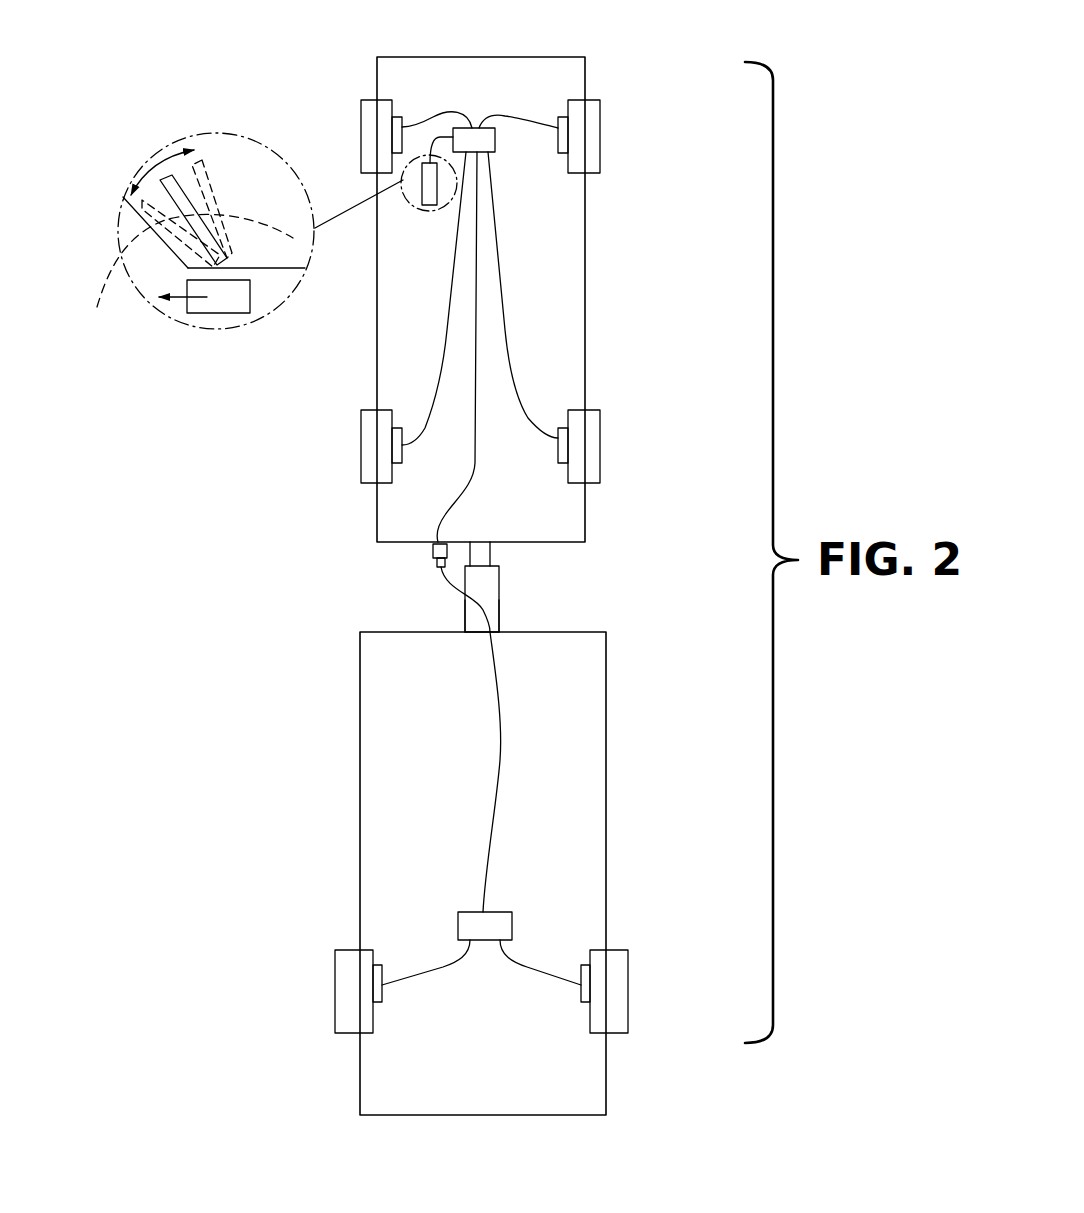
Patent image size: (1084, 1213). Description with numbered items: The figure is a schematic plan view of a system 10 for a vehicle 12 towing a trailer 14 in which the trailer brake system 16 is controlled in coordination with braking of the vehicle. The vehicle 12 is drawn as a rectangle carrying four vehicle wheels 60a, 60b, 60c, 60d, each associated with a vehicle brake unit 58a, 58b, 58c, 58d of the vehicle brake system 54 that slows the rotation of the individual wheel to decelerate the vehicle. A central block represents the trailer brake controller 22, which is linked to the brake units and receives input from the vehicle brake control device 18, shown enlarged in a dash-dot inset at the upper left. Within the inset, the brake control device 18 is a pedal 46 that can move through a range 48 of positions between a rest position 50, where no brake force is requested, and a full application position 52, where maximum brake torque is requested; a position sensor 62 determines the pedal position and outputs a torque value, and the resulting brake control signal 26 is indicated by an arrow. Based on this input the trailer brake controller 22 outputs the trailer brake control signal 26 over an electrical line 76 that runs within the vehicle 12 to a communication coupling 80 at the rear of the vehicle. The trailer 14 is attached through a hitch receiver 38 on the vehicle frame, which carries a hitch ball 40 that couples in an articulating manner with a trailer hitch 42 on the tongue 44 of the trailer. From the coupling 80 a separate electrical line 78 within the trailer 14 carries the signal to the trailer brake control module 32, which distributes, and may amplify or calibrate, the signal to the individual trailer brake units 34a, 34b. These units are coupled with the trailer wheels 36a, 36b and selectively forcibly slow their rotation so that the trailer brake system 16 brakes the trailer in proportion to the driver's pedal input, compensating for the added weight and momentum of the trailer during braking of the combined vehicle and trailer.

The system 10 is at (676, 95).
The vehicle 12 is at (587, 297).
The trailer 14 is at (618, 764).
The trailer brake system 16 is at (532, 923).
The vehicle brake control device 18 is at (257, 183).
The trailer brake controller 22 is at (537, 278).
The vehicle brake system 54 is at (495, 143).
The brake control signal 26 is at (176, 303).
The trailer brake control module 32 is at (467, 911).
The trailer brake unit 34a is at (378, 965).
The trailer brake unit 34b is at (579, 965).
The trailer wheel 36a is at (336, 1004).
The trailer wheel 36b is at (627, 1006).
The hitch receiver 38 is at (493, 552).
The hitch ball 40 is at (500, 593).
The trailer hitch 42 is at (463, 577).
The tongue 44 is at (494, 616).
The pedal 46 is at (430, 205).
The range of movement 48 is at (146, 176).
The rest position 50 is at (214, 213).
The full application position 52 is at (185, 274).
The vehicle brake unit 58a is at (402, 125).
The vehicle brake unit 58b is at (402, 447).
The vehicle brake unit 58c is at (558, 125).
The vehicle brake unit 58d is at (558, 440).
The vehicle wheel 60a is at (361, 113).
The vehicle wheel 60b is at (361, 464).
The vehicle wheel 60c is at (600, 117).
The vehicle wheel 60d is at (599, 458).
The position sensor 62 is at (252, 300).
The electrical line 76 is at (473, 465).
The electrical line 78 is at (502, 770).
The communication coupling 80 is at (433, 557).